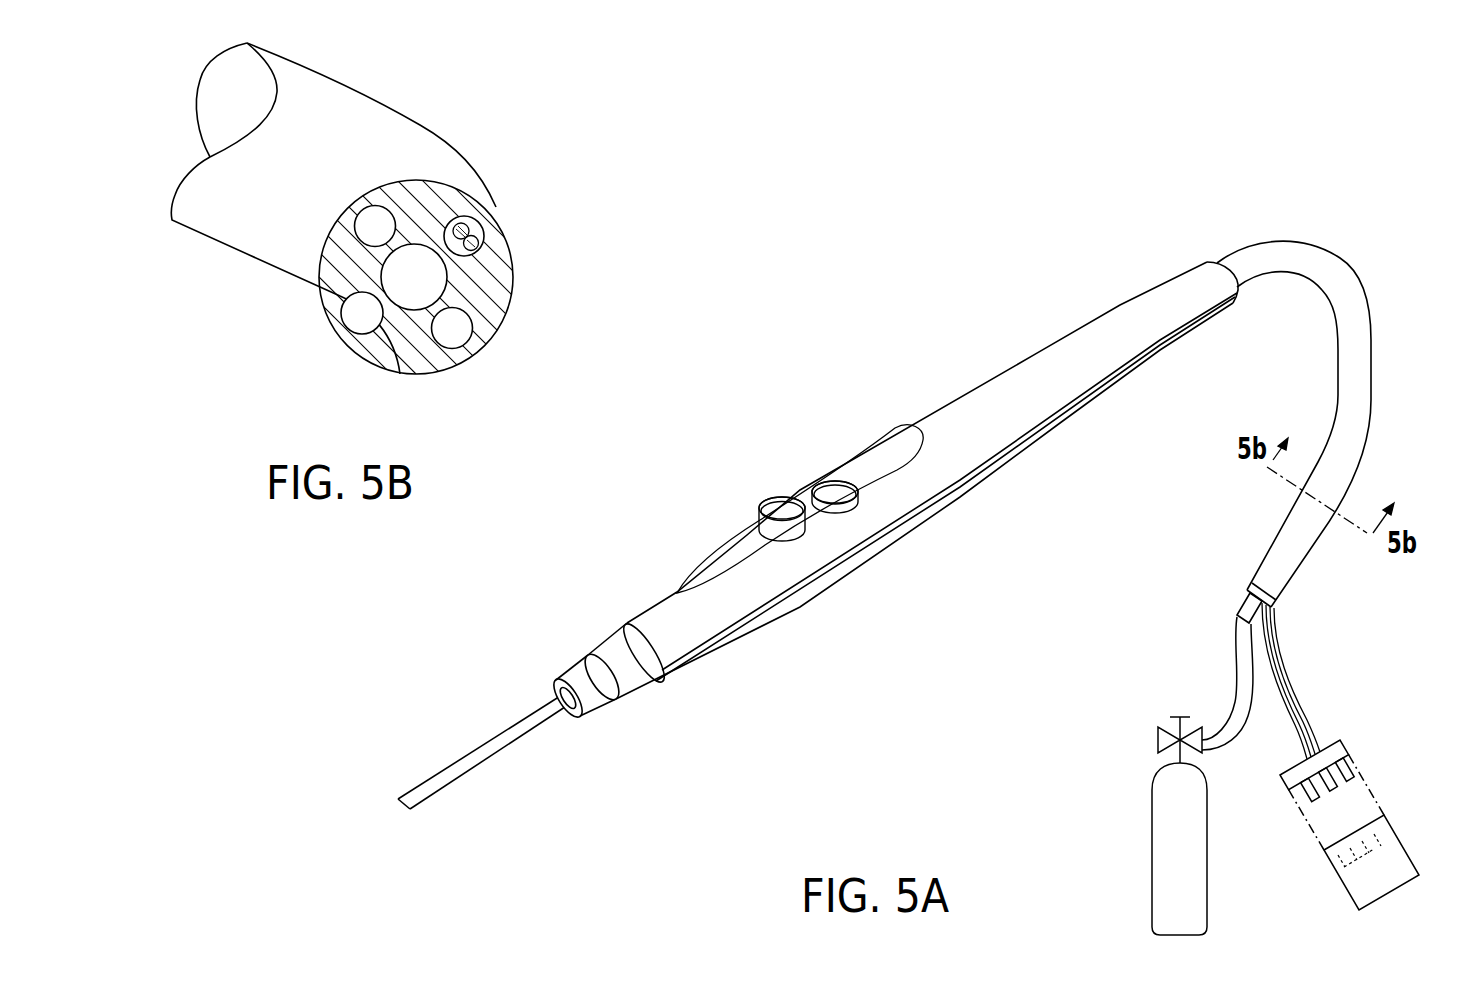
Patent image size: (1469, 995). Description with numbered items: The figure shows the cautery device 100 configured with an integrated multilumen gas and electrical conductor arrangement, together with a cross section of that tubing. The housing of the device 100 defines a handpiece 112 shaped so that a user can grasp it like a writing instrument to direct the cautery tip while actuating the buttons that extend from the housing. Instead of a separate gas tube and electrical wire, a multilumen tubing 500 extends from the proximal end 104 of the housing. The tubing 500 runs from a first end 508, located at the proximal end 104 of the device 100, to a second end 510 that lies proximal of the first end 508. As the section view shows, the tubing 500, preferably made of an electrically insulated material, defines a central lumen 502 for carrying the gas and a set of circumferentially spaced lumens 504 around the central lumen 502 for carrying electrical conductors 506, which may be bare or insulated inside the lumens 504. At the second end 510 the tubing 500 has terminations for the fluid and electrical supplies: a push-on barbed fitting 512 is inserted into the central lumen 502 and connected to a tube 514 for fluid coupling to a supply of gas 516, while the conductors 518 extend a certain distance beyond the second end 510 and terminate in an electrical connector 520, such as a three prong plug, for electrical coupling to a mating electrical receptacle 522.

In FIG. 5A, the cautery device 100 is at (906, 398).
In FIG. 5A, the proximal end 104 is at (1220, 261).
In FIG. 5A, the handpiece 112 is at (1040, 353).
In FIG. 5A, the multilumen tubing 500 is at (1321, 404).
In FIG. 5B, the multilumen tubing 500 is at (395, 132).
In FIG. 5B, the central lumen 502 is at (403, 308).
In FIG. 5B, the circumferentially spaced lumens 504 is at (355, 226).
In FIG. 5B, the electrical conductors 506 is at (466, 229).
In FIG. 5A, the first end 508 is at (1253, 284).
In FIG. 5A, the second end 510 is at (1252, 590).
In FIG. 5A, the push-on barbed fitting 512 is at (1248, 607).
In FIG. 5A, the tube 514 is at (1242, 687).
In FIG. 5A, the supply of gas 516 is at (1152, 836).
In FIG. 5A, the conductors 518 is at (1280, 663).
In FIG. 5A, the electrical connector 520 is at (1340, 740).
In FIG. 5A, the electrical receptacle 522 is at (1340, 883).